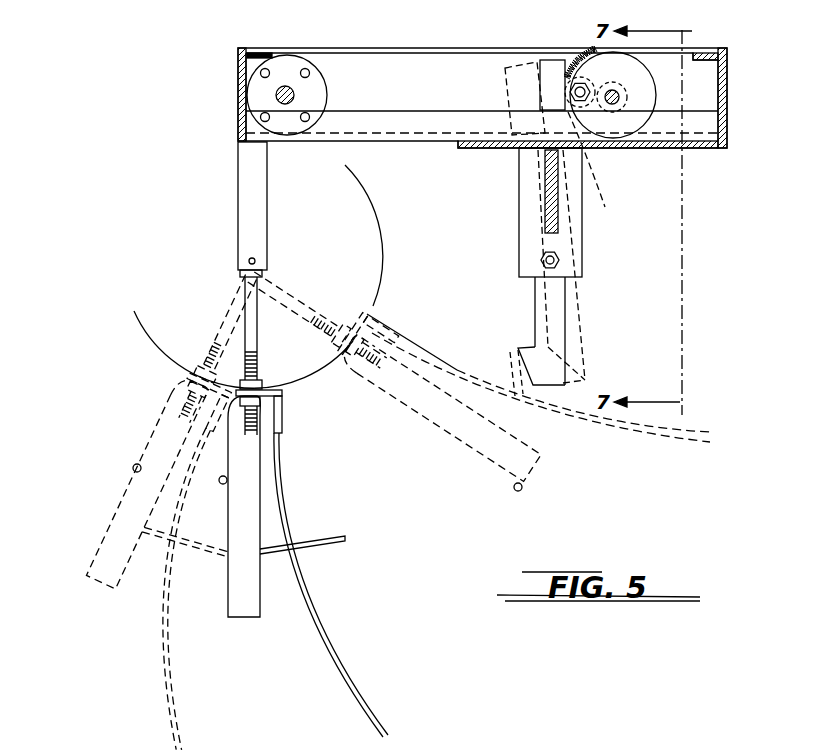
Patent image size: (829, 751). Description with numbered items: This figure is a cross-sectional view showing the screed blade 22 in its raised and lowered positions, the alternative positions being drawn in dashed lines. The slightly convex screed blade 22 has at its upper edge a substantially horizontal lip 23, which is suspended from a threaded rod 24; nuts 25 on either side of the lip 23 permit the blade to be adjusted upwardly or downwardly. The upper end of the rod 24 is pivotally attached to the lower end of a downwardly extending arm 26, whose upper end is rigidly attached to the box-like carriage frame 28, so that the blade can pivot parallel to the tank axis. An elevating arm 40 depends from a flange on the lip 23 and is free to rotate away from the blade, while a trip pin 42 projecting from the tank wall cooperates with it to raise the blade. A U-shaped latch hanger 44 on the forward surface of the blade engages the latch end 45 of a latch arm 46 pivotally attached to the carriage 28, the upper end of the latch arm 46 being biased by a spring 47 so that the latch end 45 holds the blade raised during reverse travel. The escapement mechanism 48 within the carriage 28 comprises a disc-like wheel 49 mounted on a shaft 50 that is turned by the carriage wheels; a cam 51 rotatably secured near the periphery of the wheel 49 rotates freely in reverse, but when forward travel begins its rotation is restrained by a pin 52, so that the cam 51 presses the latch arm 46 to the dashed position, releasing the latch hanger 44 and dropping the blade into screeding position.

The screed blade 22 is at (350, 672).
The horizontal lip 23 is at (283, 397).
The threaded rod 24 is at (247, 323).
The nuts 25 is at (260, 383).
The downwardly extending arm 26 is at (245, 190).
The carriage frame 28 is at (728, 73).
The elevating arm 40 is at (238, 615).
The trip pin 42 is at (222, 484).
The latch hanger 44 is at (343, 537).
The latch end 45 is at (518, 348).
The latch arm 46 is at (582, 235).
The spring 47 is at (586, 62).
The escapement mechanism 48 is at (642, 51).
The disc-like wheel 49 is at (657, 104).
The shaft 50 is at (612, 105).
The cam 51 is at (563, 110).
The pin 52 is at (601, 171).